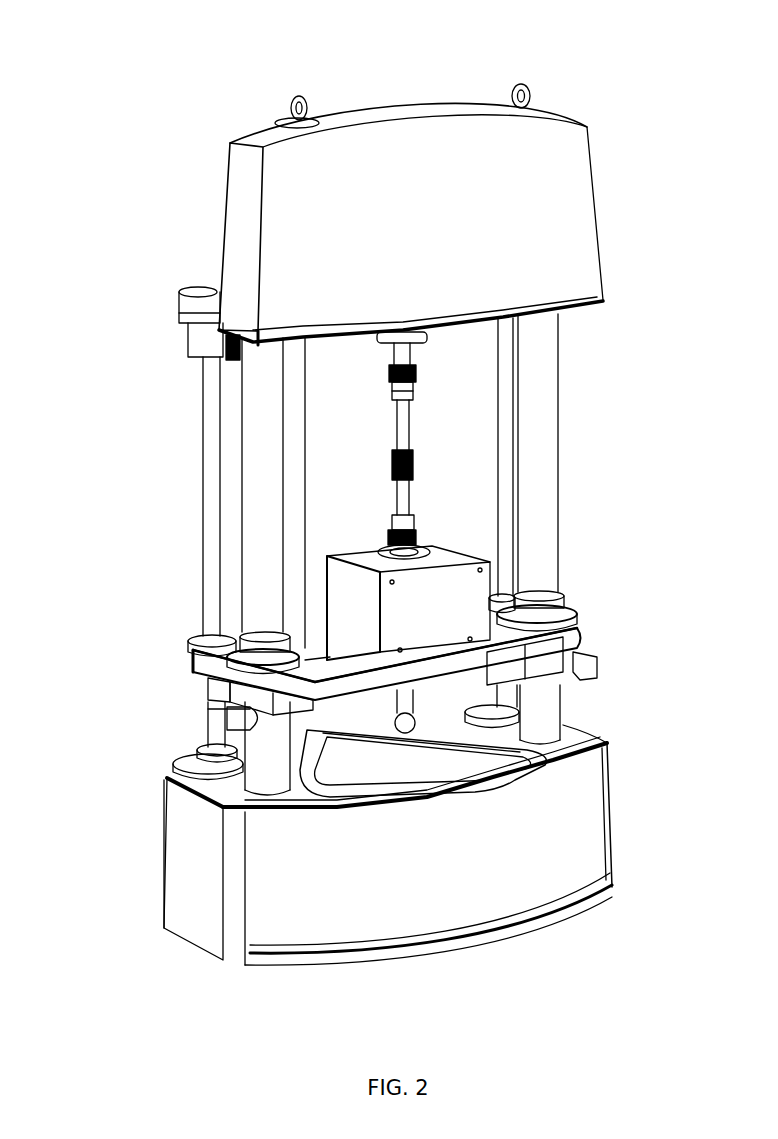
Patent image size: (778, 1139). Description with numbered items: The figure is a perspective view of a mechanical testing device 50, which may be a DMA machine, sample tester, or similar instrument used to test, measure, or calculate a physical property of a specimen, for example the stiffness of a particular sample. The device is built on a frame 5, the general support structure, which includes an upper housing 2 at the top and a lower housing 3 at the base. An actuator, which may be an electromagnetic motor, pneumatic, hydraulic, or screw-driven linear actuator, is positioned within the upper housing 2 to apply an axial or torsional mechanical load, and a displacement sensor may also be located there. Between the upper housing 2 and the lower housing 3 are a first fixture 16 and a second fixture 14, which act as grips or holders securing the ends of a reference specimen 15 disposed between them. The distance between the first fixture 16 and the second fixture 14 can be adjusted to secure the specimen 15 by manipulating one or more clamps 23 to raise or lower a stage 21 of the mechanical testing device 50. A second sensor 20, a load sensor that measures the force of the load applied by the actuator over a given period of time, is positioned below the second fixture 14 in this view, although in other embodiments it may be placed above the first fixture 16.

The mechanical testing device 50 is at (116, 86).
The upper housing 2 is at (568, 188).
The lower housing 3 is at (573, 823).
The frame 5 is at (260, 427).
The second fixture 14 is at (413, 533).
The specimen 15 is at (425, 453).
The first fixture 16 is at (410, 390).
The second sensor 20 is at (455, 593).
The stage 21 is at (190, 637).
The clamps 23 is at (597, 656).